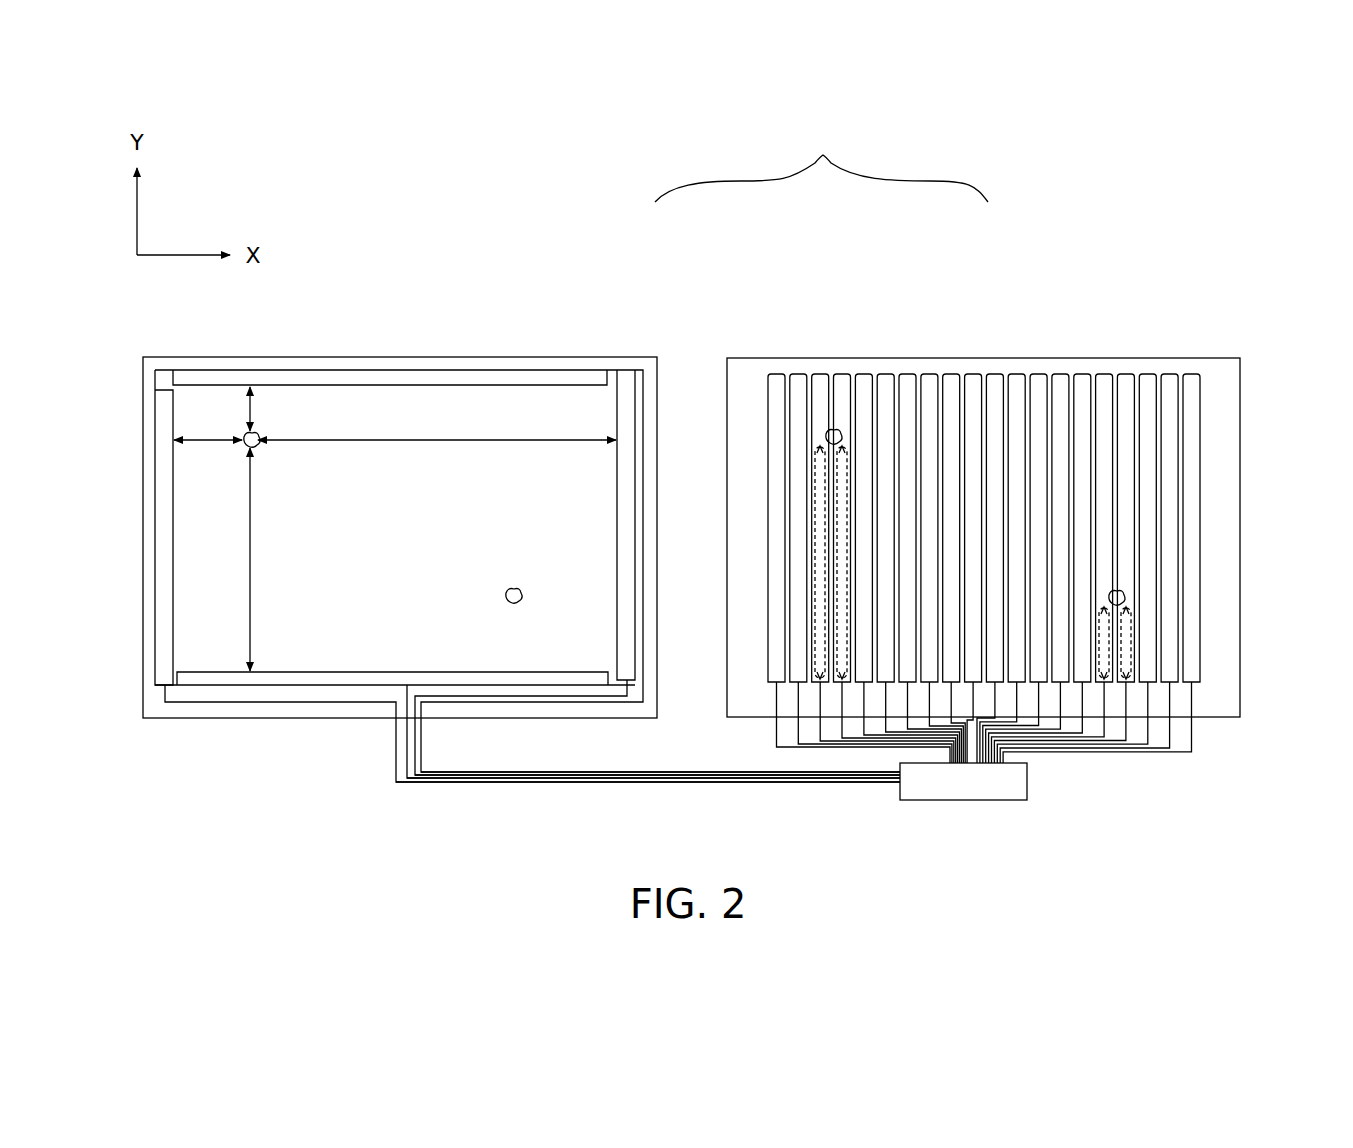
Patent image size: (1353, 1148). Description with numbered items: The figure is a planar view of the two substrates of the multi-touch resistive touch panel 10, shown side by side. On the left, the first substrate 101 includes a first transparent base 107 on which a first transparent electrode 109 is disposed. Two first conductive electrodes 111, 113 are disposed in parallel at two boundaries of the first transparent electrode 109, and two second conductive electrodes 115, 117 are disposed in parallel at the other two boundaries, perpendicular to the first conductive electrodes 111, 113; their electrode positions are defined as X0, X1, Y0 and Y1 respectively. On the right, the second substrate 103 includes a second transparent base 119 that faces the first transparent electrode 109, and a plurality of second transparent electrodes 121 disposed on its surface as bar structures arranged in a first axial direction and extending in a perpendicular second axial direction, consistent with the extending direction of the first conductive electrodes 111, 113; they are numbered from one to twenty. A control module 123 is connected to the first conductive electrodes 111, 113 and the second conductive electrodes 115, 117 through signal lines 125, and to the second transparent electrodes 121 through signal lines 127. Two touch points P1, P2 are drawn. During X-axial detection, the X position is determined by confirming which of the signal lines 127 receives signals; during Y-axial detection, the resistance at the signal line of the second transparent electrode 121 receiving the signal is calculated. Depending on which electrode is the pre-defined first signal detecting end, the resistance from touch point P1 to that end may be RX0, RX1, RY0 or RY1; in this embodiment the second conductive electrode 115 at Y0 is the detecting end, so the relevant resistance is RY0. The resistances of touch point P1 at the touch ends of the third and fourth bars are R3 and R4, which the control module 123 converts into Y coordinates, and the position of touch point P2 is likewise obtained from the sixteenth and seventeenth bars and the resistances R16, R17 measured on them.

The multi-touch resistive touch panel 10 is at (821, 164).
The first substrate 101 is at (603, 245).
The second substrate 103 is at (893, 245).
The first transparent base 107 is at (488, 357).
The first transparent electrode 109 is at (617, 368).
The first conductive electrode 111 is at (165, 395).
The first conductive electrode 113 is at (630, 400).
The second conductive electrode 115 is at (222, 686).
The second conductive electrode 117 is at (380, 370).
The second transparent base 119 is at (978, 357).
The second transparent electrodes 121 is at (775, 372).
The control module 123 is at (960, 801).
The signal lines 125 is at (648, 786).
The signal lines 127 is at (1085, 760).
The touch point P1 is at (256, 434).
The touch point P2 is at (521, 597).
The touch end resistance R3 is at (812, 525).
The touch end resistance R4 is at (835, 585).
The resistance R16 is at (1140, 625).
The resistance R17 is at (1140, 655).
The resistance RX0 is at (208, 456).
The resistance RX1 is at (437, 456).
The resistance RY0 is at (274, 559).
The resistance RY1 is at (223, 409).